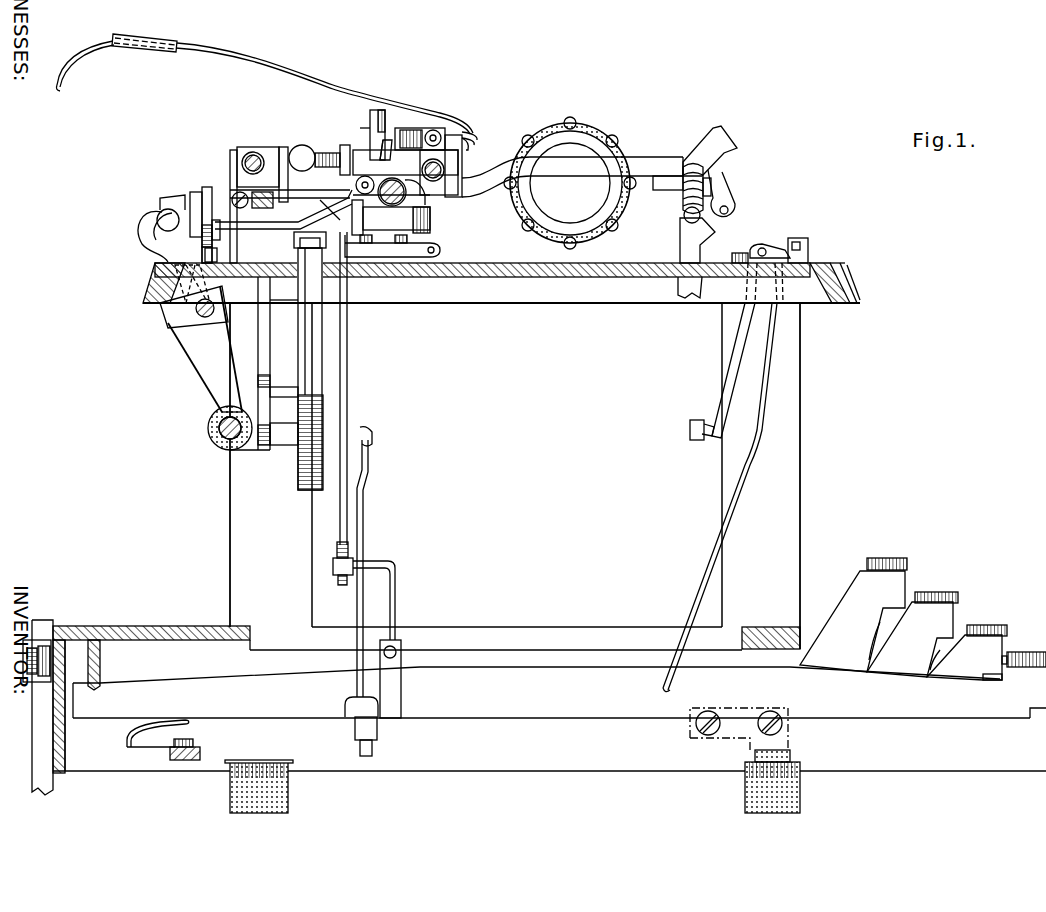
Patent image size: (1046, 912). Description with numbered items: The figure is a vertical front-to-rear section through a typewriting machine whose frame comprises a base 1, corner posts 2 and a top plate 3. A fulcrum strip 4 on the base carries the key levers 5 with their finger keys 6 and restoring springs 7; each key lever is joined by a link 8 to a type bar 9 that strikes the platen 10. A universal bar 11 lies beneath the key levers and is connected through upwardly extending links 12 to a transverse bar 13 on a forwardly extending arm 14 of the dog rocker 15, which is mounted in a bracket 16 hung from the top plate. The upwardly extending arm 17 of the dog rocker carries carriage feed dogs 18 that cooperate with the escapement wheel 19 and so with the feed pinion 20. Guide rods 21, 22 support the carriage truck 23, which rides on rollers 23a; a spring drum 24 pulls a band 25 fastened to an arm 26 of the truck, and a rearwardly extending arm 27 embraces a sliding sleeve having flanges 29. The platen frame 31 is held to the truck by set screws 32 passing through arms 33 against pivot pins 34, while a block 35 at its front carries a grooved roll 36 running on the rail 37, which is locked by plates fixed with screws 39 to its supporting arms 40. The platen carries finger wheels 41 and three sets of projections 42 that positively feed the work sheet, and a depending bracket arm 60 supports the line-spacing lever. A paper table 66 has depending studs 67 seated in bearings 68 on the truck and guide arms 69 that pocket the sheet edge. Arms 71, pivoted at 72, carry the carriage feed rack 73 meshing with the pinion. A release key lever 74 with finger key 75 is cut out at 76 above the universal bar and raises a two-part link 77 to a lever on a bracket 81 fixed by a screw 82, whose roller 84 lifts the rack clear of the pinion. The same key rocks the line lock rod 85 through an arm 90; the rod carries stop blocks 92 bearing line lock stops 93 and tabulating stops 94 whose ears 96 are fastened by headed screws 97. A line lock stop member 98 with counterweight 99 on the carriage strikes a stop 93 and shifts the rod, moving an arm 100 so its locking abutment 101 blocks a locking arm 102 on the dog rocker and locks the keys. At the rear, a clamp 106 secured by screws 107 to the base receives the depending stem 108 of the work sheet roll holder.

The base 1 is at (152, 627).
The corner posts 2 is at (515, 476).
The top plate 3 is at (501, 282).
The fulcrum strip 4 is at (100, 660).
The key levers 5 is at (350, 722).
The finger keys 6 is at (886, 558).
The restoring springs 7 is at (137, 748).
The link 8 is at (700, 598).
The type bar 9 is at (725, 390).
The platen 10 is at (570, 123).
The universal bar 11 is at (372, 726).
The upwardly extending links 12 is at (366, 478).
The transverse bar 13 is at (373, 436).
The forwardly extending arm 14 is at (323, 425).
The dog rocker 15 is at (213, 443).
The bracket 16 is at (262, 450).
The upwardly extending arm 17 is at (212, 356).
The carriage feed dogs 18 is at (203, 254).
The escapement wheel 19 is at (207, 187).
The feed pinion 20 is at (430, 218).
The guide rod 21 is at (322, 216).
The guide rod 22 is at (270, 148).
The carriage truck 23 is at (427, 172).
The rollers 23a is at (388, 148).
The spring drum 24 is at (323, 370).
The band 25 is at (305, 340).
The arm 26 is at (320, 240).
The rearwardly extending arm 27 is at (283, 147).
The flanges 29 is at (254, 152).
The platen frame 31 is at (656, 157).
The set screws 32 is at (397, 133).
The arms 33 is at (454, 135).
The pivot pins 34 is at (427, 135).
The block 35 is at (668, 187).
The grooved roll 36 is at (708, 176).
The rod or rail 37 is at (684, 214).
The screws 39 is at (740, 253).
The supporting arms 40 is at (696, 258).
The finger wheels 41 is at (570, 183).
The projections 42 is at (600, 135).
The depending bracket arm 60 is at (733, 196).
The paper table 66 is at (280, 68).
The depending studs 67 is at (378, 110).
The bearings 68 is at (368, 133).
The guide arms 69 is at (172, 41).
The arms 71 is at (430, 192).
The pivot 72 is at (365, 177).
The carriage feed rack 73 is at (420, 196).
The key lever 74 is at (536, 692).
The finger key 75 is at (1027, 652).
The aperture 76 is at (352, 706).
The two-part link 77 is at (385, 566).
The bracket 81 is at (374, 258).
The screw 82 is at (408, 258).
The roller 84 is at (430, 233).
The line lock rod 85 is at (262, 212).
The forwardly extending arm 90 is at (306, 222).
The stop blocks 92 is at (233, 199).
The line lock stop 93 is at (282, 216).
The tabulating stop 94 is at (232, 152).
The ears 96 is at (222, 238).
The headed screws 97 is at (214, 228).
The line lock stop member 98 is at (322, 170).
The counterweight 99 is at (307, 147).
The arm 100 is at (190, 193).
The locking abutment 101 is at (163, 212).
The locking arm 102 is at (146, 228).
The clamp 106 is at (42, 620).
The screws 107 is at (60, 633).
The depending stem 108 is at (26, 640).